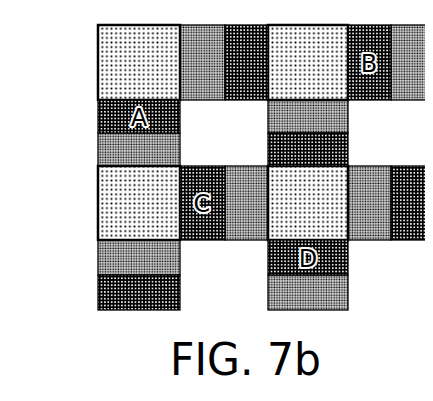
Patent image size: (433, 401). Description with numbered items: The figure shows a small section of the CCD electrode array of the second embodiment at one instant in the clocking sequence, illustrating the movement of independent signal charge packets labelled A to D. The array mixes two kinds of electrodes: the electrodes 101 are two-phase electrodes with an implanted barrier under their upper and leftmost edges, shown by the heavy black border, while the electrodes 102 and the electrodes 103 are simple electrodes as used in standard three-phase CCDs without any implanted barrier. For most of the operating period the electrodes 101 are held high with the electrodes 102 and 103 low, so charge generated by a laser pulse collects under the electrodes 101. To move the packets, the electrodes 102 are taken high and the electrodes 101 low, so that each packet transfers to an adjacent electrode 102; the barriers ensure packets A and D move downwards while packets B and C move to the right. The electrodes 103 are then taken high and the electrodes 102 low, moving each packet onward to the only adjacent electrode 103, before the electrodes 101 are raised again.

The two-phase electrode with implanted barrier 101 is at (223, 132).
The simple three-phase electrode 102 is at (261, 167).
The simple three-phase electrode 103 is at (261, 167).